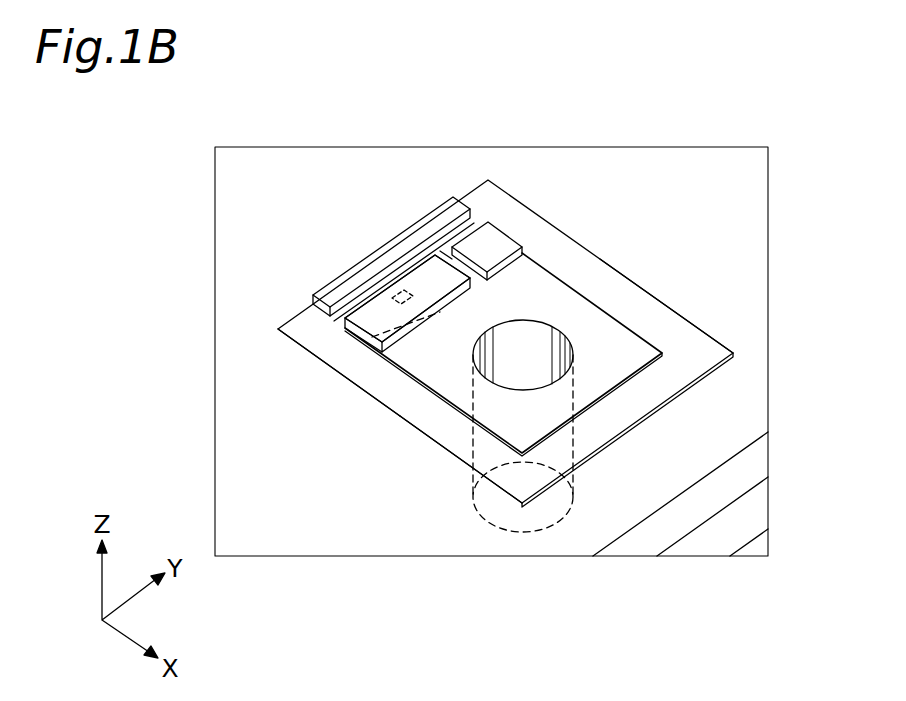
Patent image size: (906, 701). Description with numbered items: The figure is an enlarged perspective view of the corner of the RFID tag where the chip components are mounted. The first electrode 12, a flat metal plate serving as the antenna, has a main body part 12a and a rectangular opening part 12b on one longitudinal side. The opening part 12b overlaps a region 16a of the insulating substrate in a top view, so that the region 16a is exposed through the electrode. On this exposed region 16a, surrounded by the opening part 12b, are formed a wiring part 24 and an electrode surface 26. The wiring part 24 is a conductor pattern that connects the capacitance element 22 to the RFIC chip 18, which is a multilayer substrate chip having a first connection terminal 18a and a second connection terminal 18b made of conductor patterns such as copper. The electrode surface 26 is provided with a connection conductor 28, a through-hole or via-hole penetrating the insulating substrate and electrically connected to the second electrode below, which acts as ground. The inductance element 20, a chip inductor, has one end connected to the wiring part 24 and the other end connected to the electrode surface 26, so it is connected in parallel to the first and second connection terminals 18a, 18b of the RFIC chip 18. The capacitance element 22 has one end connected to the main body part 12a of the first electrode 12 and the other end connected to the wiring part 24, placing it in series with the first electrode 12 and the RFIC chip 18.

The first electrode 12 is at (733, 150).
The main body part 12a is at (668, 158).
The opening part 12b is at (368, 383).
The region 16a is at (424, 418).
The RFIC chip 18 is at (433, 275).
The first connection terminal 18a is at (403, 289).
The second connection terminal 18b is at (372, 337).
The inductance element 20 is at (488, 237).
The capacitance element 22 is at (447, 208).
The wiring part 24 is at (345, 320).
The electrode surface 26 is at (608, 340).
The connection conductor 28 is at (525, 328).